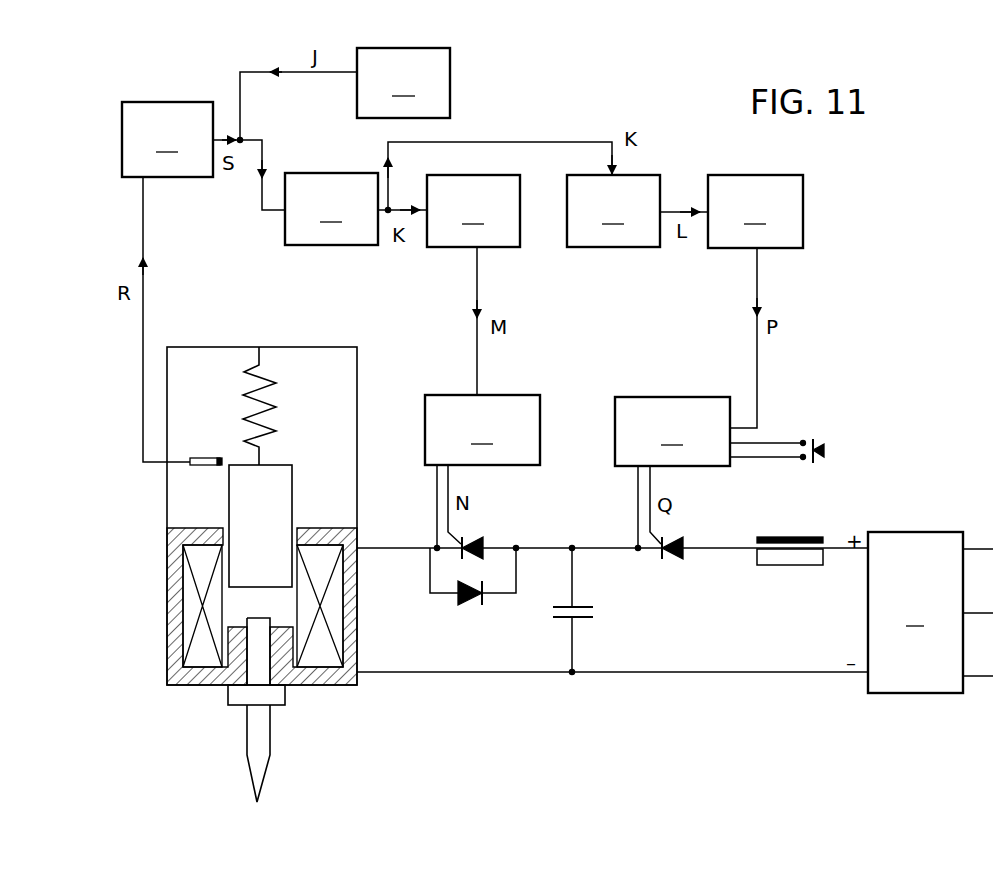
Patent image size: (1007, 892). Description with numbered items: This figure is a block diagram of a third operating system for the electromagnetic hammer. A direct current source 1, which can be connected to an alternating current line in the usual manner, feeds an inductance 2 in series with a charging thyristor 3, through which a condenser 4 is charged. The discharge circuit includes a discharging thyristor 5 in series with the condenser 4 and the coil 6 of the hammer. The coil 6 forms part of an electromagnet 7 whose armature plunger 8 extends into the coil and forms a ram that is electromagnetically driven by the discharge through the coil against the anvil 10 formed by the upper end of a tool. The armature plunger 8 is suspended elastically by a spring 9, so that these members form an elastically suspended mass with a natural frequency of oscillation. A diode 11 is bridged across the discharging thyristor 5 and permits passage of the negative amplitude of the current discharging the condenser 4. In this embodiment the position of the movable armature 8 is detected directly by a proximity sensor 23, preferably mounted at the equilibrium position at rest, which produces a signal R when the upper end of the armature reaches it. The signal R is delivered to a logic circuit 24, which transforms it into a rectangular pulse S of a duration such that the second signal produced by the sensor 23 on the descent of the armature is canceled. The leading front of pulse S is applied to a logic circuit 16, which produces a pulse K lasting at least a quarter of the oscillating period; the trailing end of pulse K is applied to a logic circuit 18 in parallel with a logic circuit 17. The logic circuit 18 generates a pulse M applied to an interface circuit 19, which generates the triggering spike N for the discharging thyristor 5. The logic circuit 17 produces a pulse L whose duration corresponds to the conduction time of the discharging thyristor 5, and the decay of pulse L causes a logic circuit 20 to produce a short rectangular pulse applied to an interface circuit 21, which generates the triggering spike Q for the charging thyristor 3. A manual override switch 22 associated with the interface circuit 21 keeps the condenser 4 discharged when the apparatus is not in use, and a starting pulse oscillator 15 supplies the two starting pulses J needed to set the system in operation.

The direct current source 1 is at (930, 612).
The inductance 2 is at (787, 560).
The charging thyristor 3 is at (676, 560).
The condenser 4 is at (580, 606).
The discharging thyristor 5 is at (478, 540).
The coil 6 is at (192, 601).
The electromagnet 7 is at (320, 673).
The armature plunger 8 is at (275, 509).
The spring 9 is at (250, 402).
The anvil 10 is at (257, 733).
The diode 11 is at (470, 605).
The starting pulse oscillator 15 is at (403, 83).
The logic circuit 16 is at (331, 209).
The logic circuit 17 is at (613, 211).
The logic circuit 18 is at (473, 211).
The interface circuit 19 is at (482, 430).
The logic circuit 20 is at (755, 211).
The interface circuit 21 is at (672, 431).
The manual override switch 22 is at (815, 440).
The proximity sensor 23 is at (200, 470).
The logic circuit 24 is at (167, 139).